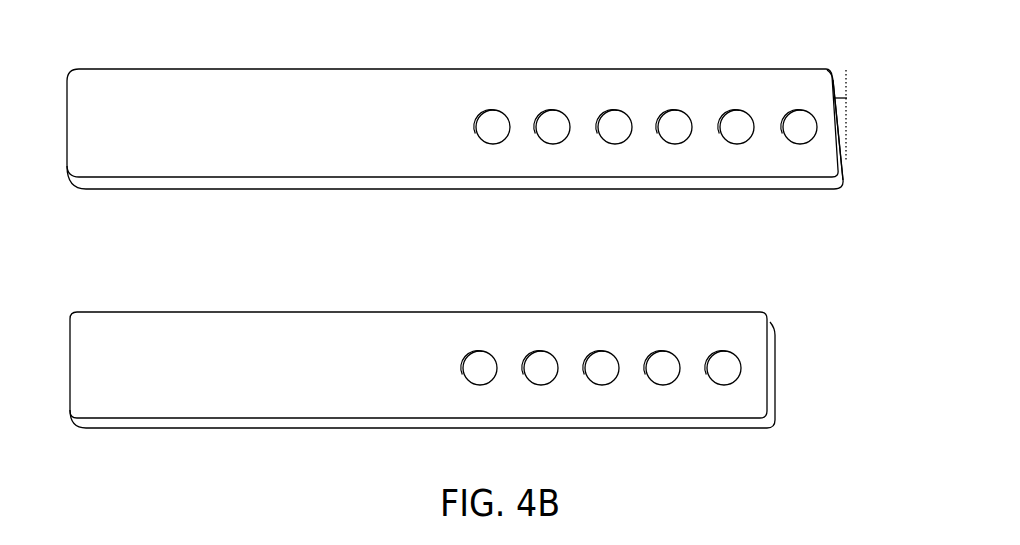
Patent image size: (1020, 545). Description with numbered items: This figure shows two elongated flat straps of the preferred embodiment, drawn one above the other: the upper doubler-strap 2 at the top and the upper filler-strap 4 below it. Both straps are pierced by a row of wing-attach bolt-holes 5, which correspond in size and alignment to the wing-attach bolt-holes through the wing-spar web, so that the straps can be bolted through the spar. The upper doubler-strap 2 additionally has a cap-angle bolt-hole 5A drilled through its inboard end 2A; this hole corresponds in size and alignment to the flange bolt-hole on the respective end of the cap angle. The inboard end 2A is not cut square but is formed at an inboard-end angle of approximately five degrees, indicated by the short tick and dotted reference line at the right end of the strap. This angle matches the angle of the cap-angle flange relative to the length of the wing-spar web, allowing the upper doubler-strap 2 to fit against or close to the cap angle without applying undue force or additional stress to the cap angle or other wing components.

The upper doubler-strap 2 is at (229, 90).
The inboard end 2A is at (844, 172).
The upper filler-strap 4 is at (202, 338).
The wing-attach bolt-holes 5 is at (566, 130).
The cap-angle bolt-hole 5A is at (812, 123).